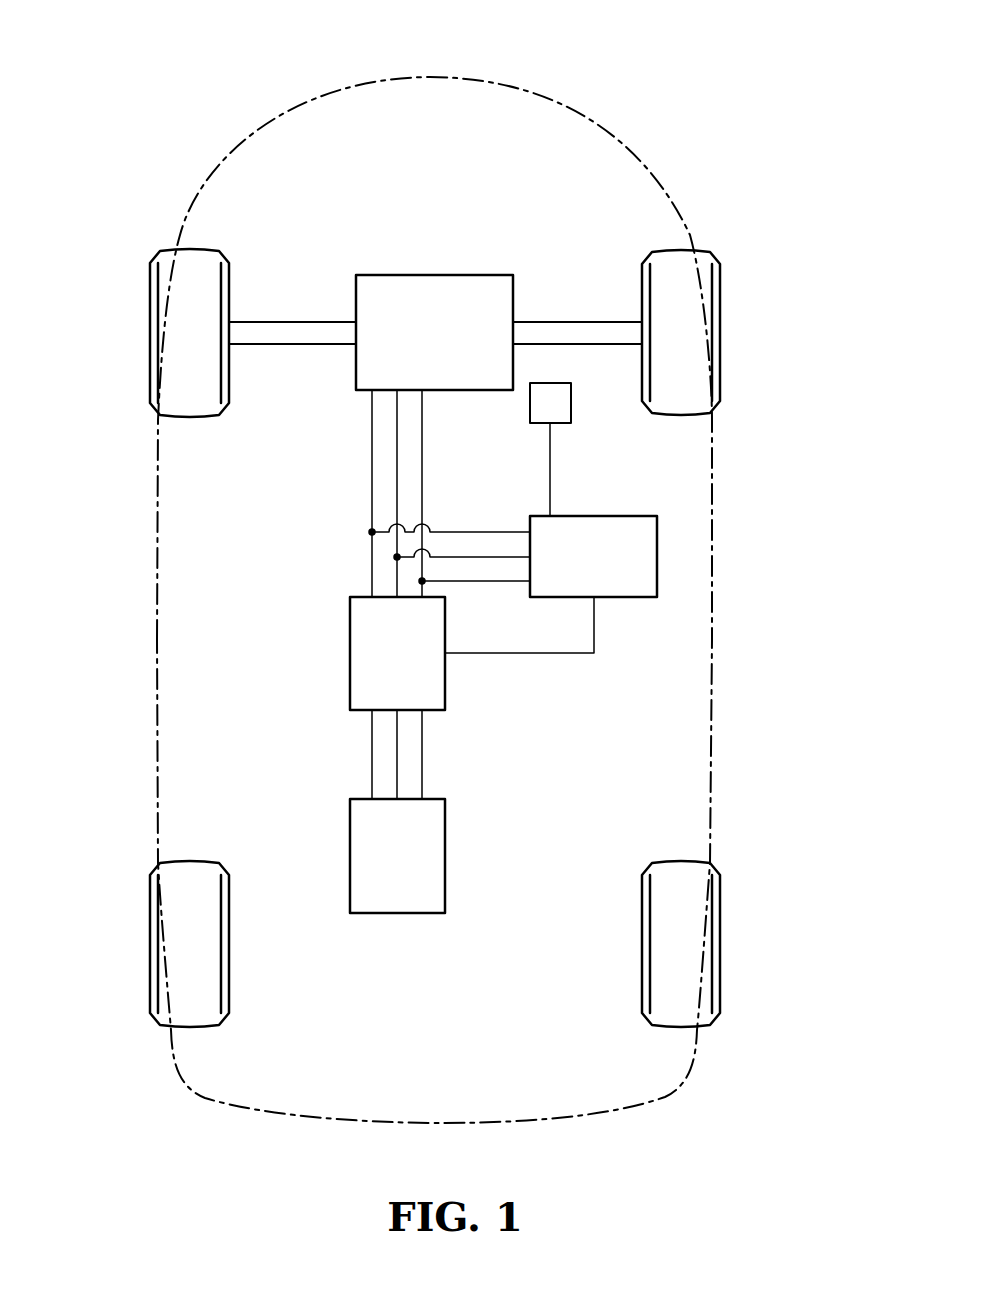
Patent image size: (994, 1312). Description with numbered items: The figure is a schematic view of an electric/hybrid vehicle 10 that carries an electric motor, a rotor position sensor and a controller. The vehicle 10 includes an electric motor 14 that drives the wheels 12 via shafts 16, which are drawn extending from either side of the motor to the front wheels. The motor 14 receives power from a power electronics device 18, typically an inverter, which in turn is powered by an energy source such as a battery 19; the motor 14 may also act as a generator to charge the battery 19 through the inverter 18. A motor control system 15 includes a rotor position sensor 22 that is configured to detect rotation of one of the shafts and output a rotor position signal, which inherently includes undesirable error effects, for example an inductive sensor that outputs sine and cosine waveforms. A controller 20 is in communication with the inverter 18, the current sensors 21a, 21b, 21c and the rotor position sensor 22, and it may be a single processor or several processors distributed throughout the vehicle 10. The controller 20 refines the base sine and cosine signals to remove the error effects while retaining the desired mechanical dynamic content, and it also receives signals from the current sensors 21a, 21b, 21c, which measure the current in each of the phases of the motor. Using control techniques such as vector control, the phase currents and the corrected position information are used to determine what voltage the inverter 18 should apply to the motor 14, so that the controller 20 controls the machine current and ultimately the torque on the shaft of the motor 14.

The electric/hybrid vehicle 10 is at (565, 52).
The wheels 12 is at (166, 263).
The electric motor 14 is at (449, 343).
The motor control system 15 is at (637, 447).
The shafts 16 is at (320, 322).
The power electronics device 18 is at (411, 664).
The battery 19 is at (411, 869).
The controller 20 is at (607, 567).
The current sensor 21a is at (422, 581).
The current sensor 21b is at (397, 557).
The current sensor 21c is at (372, 532).
The rotor position sensor 22 is at (568, 421).